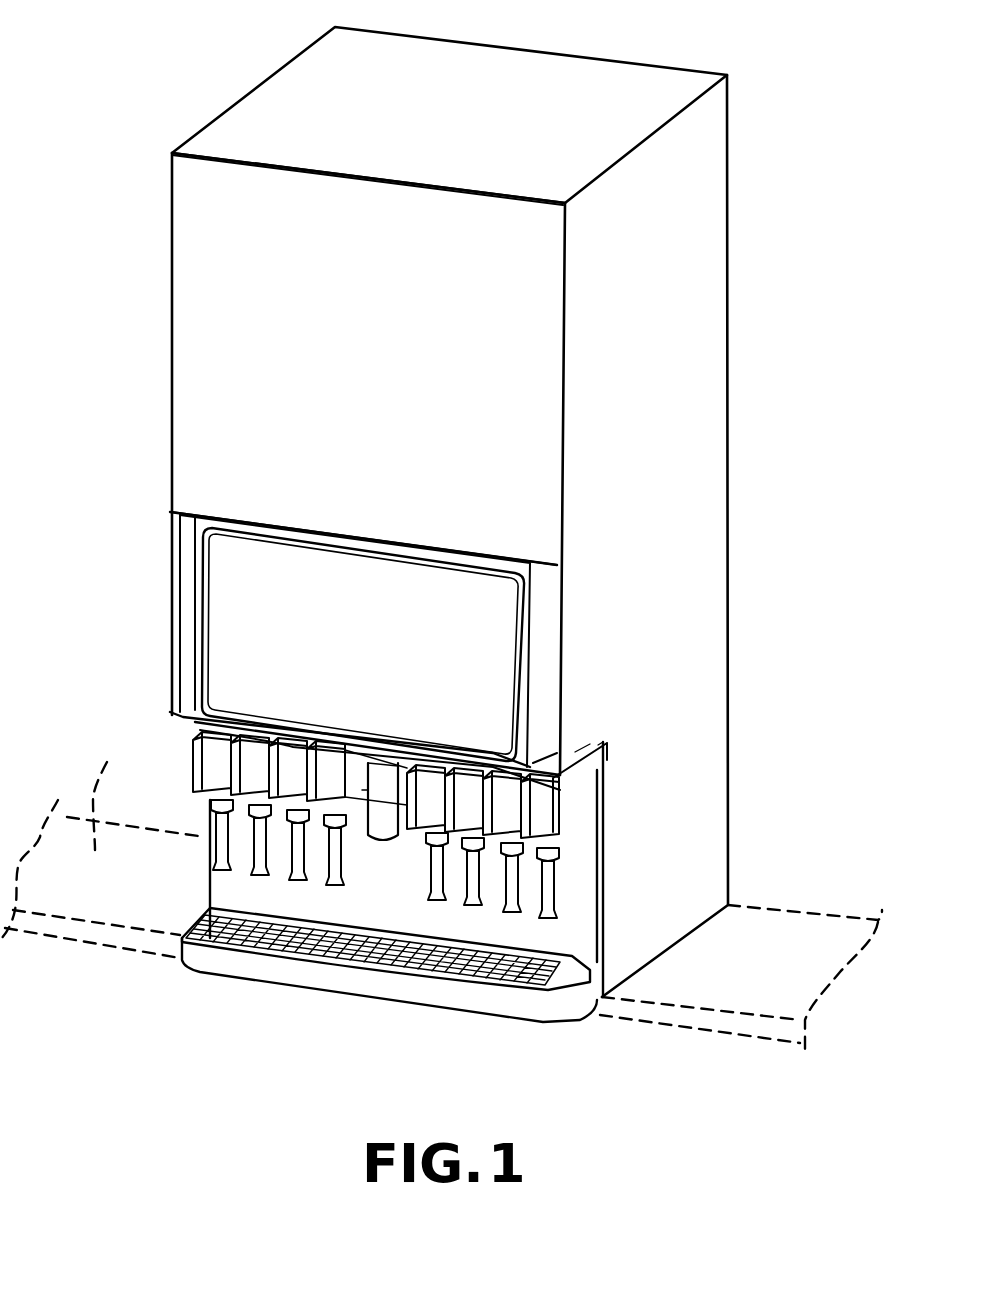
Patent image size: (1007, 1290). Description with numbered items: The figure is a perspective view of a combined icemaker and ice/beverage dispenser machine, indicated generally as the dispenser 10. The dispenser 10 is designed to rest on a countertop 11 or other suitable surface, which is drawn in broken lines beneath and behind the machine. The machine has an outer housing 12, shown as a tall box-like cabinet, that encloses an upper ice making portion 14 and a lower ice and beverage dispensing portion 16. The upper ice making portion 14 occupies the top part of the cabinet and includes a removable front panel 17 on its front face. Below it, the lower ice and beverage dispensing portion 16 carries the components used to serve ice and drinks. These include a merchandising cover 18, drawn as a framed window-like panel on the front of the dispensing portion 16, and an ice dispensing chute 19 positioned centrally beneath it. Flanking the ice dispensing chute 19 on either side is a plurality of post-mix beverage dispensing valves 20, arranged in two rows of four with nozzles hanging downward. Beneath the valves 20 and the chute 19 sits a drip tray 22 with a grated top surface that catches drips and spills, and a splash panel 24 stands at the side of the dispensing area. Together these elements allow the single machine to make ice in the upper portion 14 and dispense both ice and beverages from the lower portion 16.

The combined ice making and ice and beverage dispensing machine 10 is at (135, 112).
The countertop 11 is at (108, 762).
The outer housing 12 is at (698, 598).
The upper ice making portion 14 is at (166, 331).
The lower ice and beverage dispensing portion 16 is at (164, 623).
The removable front panel 17 is at (223, 413).
The merchandising cover 18 is at (248, 653).
The ice dispensing chute 19 is at (387, 838).
The post-mix beverage dispensing valves 20 is at (247, 770).
The drip tray 22 is at (328, 977).
The splash panel 24 is at (572, 875).